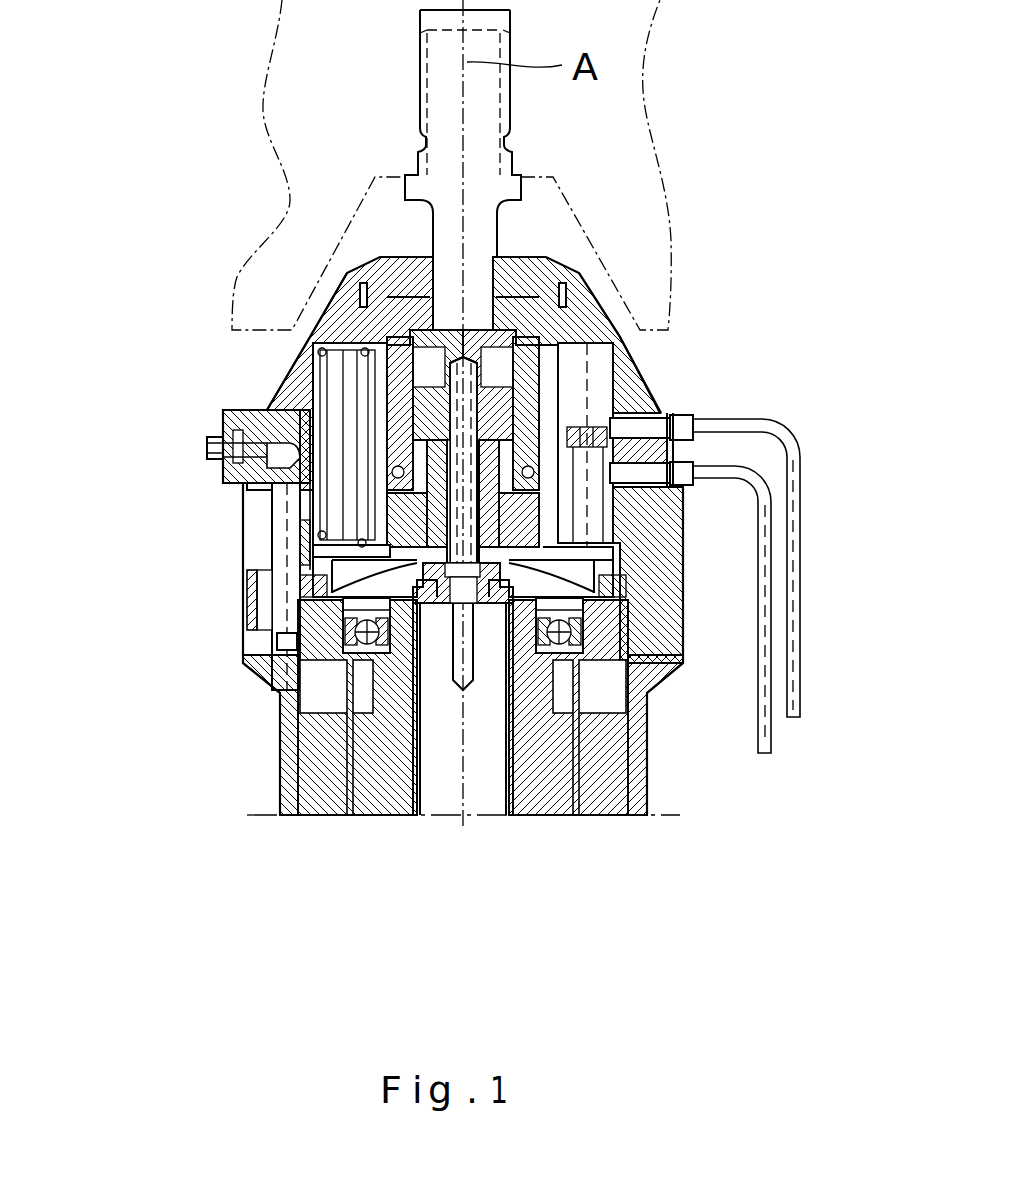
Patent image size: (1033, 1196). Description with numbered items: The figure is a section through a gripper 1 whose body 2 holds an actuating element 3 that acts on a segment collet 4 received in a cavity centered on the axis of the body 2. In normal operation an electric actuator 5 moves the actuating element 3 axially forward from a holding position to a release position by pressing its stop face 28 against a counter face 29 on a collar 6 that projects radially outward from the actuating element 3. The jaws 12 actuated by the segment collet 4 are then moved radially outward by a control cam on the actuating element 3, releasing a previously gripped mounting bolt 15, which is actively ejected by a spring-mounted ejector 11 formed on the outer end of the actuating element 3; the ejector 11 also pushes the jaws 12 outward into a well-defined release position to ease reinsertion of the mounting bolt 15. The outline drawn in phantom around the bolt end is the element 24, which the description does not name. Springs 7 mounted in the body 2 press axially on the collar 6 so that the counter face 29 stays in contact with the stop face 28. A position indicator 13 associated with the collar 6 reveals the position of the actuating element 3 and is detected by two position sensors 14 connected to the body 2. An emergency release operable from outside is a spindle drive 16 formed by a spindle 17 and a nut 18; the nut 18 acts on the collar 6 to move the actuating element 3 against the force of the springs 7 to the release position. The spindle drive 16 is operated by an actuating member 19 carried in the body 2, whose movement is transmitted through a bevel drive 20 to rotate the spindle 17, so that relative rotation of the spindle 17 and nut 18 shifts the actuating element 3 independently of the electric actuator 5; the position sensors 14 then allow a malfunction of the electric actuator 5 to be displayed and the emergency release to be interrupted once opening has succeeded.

The gripper 1 is at (262, 732).
The body 2 is at (247, 660).
The actuating element 3 is at (290, 525).
The segment collet 4 is at (347, 392).
The electric actuator 5 is at (443, 781).
The collar 6 is at (283, 590).
The springs 7 is at (207, 443).
The ejector 11 is at (312, 367).
The jaws 12 is at (368, 308).
The position indicator 13 is at (585, 515).
The position sensors 14 is at (735, 428).
The mounting bolt 15 is at (477, 238).
The spindle drive 16 is at (260, 547).
The spindle 17 is at (243, 518).
The nut 18 is at (243, 603).
The actuating member 19 is at (222, 418).
The bevel drive 20 is at (250, 483).
The workpiece 24 is at (303, 110).
The stop face 28 is at (510, 814).
The counter face 29 is at (627, 587).